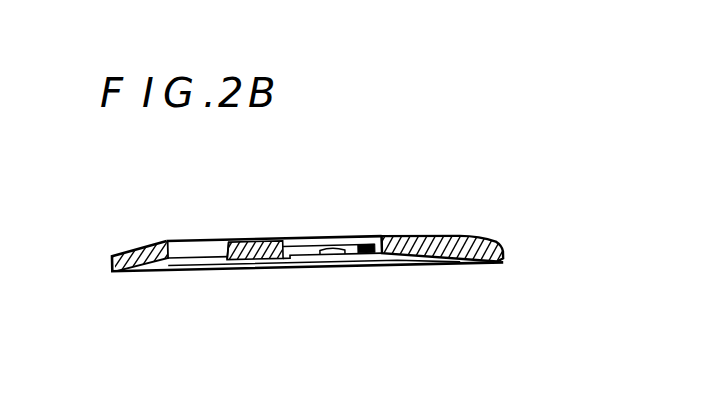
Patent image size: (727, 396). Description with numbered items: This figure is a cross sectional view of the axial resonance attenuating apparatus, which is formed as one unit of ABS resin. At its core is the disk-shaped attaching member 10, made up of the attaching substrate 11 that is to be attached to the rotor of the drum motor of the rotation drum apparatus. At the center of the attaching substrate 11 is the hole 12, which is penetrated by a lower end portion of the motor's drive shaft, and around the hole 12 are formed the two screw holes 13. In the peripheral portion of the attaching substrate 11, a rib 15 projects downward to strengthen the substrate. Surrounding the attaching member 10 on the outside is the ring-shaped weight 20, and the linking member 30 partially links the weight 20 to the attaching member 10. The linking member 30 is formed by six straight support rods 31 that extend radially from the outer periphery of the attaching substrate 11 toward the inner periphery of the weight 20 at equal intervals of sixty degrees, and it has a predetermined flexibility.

The weight 20 is at (486, 235).
The linking member 30 is at (193, 266).
The attaching member 10 is at (256, 265).
The attaching substrate 11 is at (272, 243).
The rib 15 is at (227, 240).
The hole 12 is at (322, 256).
The screw holes 13 is at (362, 255).
The support rods 31 is at (423, 237).